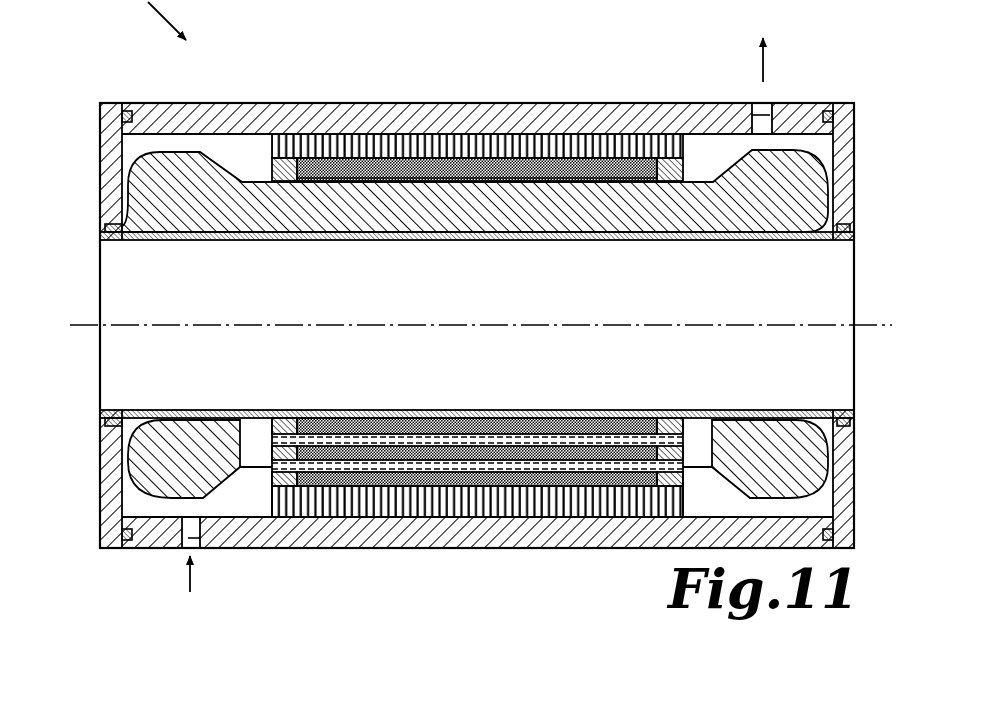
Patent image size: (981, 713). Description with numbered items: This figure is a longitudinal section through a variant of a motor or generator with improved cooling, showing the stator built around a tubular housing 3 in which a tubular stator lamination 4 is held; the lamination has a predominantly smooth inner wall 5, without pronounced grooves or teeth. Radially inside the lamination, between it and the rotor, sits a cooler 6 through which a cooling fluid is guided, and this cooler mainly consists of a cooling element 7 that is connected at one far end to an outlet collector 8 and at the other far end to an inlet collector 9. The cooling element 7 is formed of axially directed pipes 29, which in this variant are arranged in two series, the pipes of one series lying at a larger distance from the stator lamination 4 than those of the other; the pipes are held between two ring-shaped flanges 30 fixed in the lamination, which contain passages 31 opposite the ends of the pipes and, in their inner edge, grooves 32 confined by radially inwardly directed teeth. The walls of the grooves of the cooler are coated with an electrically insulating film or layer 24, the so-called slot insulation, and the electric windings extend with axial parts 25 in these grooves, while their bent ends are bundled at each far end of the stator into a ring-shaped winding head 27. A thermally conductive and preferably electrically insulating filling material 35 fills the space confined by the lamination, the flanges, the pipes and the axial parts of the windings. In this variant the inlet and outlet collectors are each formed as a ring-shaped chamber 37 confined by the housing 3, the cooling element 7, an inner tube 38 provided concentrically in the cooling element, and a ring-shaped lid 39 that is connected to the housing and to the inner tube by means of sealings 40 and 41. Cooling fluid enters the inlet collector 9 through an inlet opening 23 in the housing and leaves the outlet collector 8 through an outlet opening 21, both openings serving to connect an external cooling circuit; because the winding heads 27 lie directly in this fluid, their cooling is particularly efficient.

The tubular housing 3 is at (250, 103).
The stator lamination 4 is at (612, 150).
The inner wall 5 is at (478, 165).
The cooler 6 is at (816, 82).
The cooling element 7 is at (345, 484).
The outlet collector 8 is at (812, 147).
The inlet collector 9 is at (260, 152).
The outlet opening 21 is at (752, 115).
The inlet opening 23 is at (200, 538).
The electrically insulating film or layer 24 is at (526, 180).
The axial parts 25 is at (440, 201).
The ring-shaped winding head 27 is at (178, 178).
The axially directed pipes 29 is at (440, 432).
The ring-shaped flanges 30 is at (355, 141).
The passages 31 is at (272, 468).
The grooves 32 is at (572, 182).
The filling material 35 is at (545, 456).
The ring-shaped chamber 37 is at (135, 148).
The inner tube 38 is at (805, 241).
The ring-shaped lid 39 is at (855, 483).
The sealing 40 is at (135, 103).
The sealing 41 is at (848, 222).